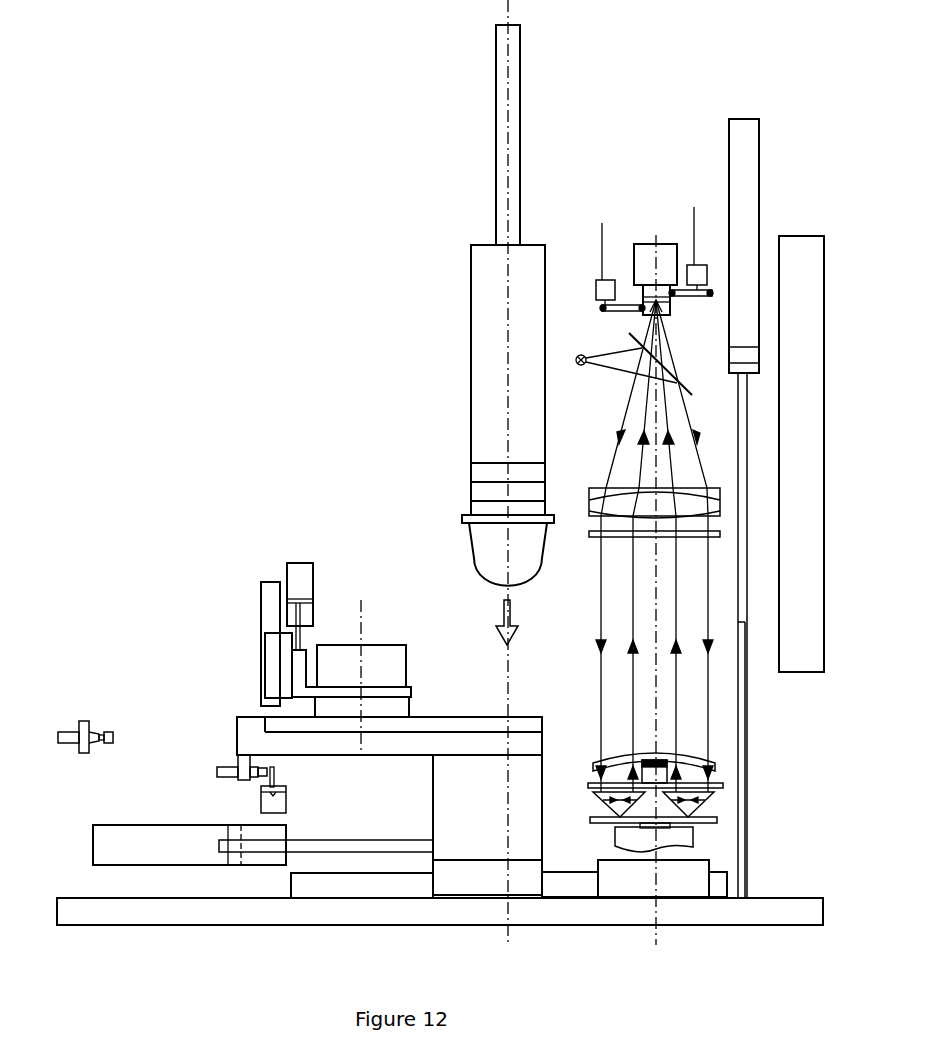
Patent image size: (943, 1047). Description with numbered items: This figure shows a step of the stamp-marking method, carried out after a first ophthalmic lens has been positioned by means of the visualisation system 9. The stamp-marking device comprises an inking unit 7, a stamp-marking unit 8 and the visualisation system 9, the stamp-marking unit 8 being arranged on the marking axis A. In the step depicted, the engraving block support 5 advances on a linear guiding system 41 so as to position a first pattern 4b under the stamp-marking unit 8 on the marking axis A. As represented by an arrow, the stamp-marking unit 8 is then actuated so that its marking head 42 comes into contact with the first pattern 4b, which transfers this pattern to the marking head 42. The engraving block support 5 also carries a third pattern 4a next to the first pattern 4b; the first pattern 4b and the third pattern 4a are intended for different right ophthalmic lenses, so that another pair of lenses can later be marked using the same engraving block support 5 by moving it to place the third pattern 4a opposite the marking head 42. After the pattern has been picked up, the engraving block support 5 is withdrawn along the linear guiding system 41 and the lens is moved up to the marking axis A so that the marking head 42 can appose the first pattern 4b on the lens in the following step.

The inking unit 7 is at (261, 486).
The stamp-marking unit 8 is at (384, 328).
The visualisation system 9 is at (639, 170).
The marking head 42 is at (500, 558).
The engraving block support 5 is at (447, 724).
The third pattern 4a is at (466, 720).
The first pattern 4b is at (508, 716).
The linear guiding system 41 is at (441, 880).
The marking axis A is at (505, 930).